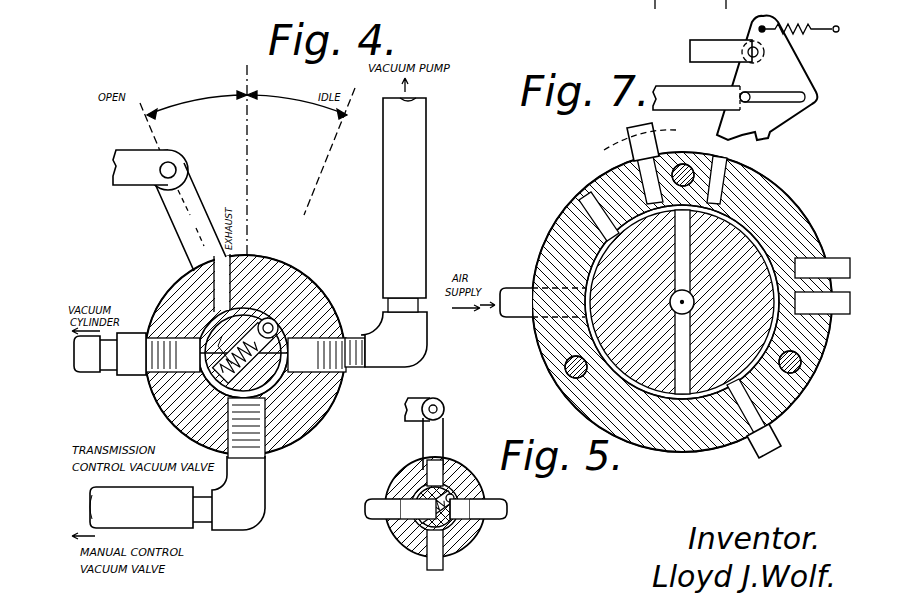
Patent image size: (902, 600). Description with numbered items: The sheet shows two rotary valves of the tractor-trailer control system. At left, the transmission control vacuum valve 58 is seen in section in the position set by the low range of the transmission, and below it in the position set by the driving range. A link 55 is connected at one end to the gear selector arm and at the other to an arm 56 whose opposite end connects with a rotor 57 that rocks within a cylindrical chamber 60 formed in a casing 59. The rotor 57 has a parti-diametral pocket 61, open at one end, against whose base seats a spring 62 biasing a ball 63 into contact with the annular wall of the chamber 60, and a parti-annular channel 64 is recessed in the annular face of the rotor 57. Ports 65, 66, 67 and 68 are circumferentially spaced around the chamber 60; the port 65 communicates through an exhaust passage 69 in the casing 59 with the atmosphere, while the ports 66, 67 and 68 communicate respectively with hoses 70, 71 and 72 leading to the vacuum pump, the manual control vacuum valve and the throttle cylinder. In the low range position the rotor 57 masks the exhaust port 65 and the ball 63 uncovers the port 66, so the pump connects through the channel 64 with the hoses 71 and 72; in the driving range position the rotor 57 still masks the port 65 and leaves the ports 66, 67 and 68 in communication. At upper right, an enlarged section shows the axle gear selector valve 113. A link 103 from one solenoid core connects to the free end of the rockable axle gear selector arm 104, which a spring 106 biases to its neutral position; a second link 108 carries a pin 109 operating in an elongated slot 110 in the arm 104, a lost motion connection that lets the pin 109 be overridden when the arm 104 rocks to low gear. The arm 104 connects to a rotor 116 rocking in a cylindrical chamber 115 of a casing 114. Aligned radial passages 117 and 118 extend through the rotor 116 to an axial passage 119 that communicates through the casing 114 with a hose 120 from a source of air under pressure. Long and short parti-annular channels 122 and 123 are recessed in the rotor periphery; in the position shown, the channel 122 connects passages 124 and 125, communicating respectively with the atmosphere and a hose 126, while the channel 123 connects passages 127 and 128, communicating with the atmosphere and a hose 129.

In FIG. 4, the link 55 is at (130, 186).
In FIG. 5, the link 55 is at (432, 398).
In FIG. 4, the arm 56 is at (172, 224).
In FIG. 5, the arm 56 is at (444, 428).
In FIG. 4, the rotor 57 is at (304, 400).
In FIG. 5, the rotor 57 is at (415, 548).
In FIG. 4, the transmission control vacuum valve 58 is at (311, 264).
In FIG. 4, the casing 59 is at (300, 286).
In FIG. 4, the cylindrical chamber 60 is at (262, 318).
In FIG. 4, the parti-diametral pocket 61 is at (170, 385).
In FIG. 4, the spring 62 is at (156, 418).
In FIG. 4, the ball 63 is at (328, 304).
In FIG. 4, the parti-annular channel 64 is at (320, 380).
In FIG. 5, the parti-annular channel 64 is at (455, 530).
In FIG. 4, the exhaust port 65 is at (226, 300).
In FIG. 5, the exhaust port 65 is at (428, 472).
In FIG. 4, the port 66 is at (338, 372).
In FIG. 5, the port 66 is at (490, 520).
In FIG. 4, the port 67 is at (268, 440).
In FIG. 5, the port 67 is at (445, 552).
In FIG. 7, the port 67 is at (715, 15).
In FIG. 4, the port 68 is at (128, 372).
In FIG. 5, the port 68 is at (382, 522).
In FIG. 4, the exhaust passage 69 is at (214, 272).
In FIG. 4, the hose 70 is at (420, 249).
In FIG. 4, the hose 71 is at (150, 519).
In FIG. 7, the hose 71 is at (643, 15).
In FIG. 4, the hose 72 is at (87, 354).
In FIG. 7, the link 103 is at (690, 50).
In FIG. 7, the axle gear selector arm 104 is at (796, 118).
In FIG. 7, the spring 106 is at (799, 17).
In FIG. 7, the link 108 is at (684, 83).
In FIG. 7, the pin 109 is at (748, 92).
In FIG. 7, the elongated slot 110 is at (790, 98).
In FIG. 7, the axle gear selector valve 113 is at (813, 174).
In FIG. 7, the casing 114 is at (778, 206).
In FIG. 7, the cylindrical chamber 115 is at (768, 226).
In FIG. 7, the rotor 116 is at (742, 258).
In FIG. 7, the radial passage 117 is at (760, 325).
In FIG. 7, the radial passage 118 is at (690, 268).
In FIG. 7, the axial passage 119 is at (694, 302).
In FIG. 7, the hose 120 is at (516, 288).
In FIG. 7, the long parti-annular channel 122 is at (806, 372).
In FIG. 7, the short parti-annular channel 123 is at (616, 162).
In FIG. 7, the passage 124 is at (728, 170).
In FIG. 7, the passage 125 is at (768, 410).
In FIG. 7, the hose 126 is at (758, 450).
In FIG. 7, the passage 127 is at (580, 194).
In FIG. 7, the passage 128 is at (658, 162).
In FIG. 7, the hose 129 is at (627, 134).